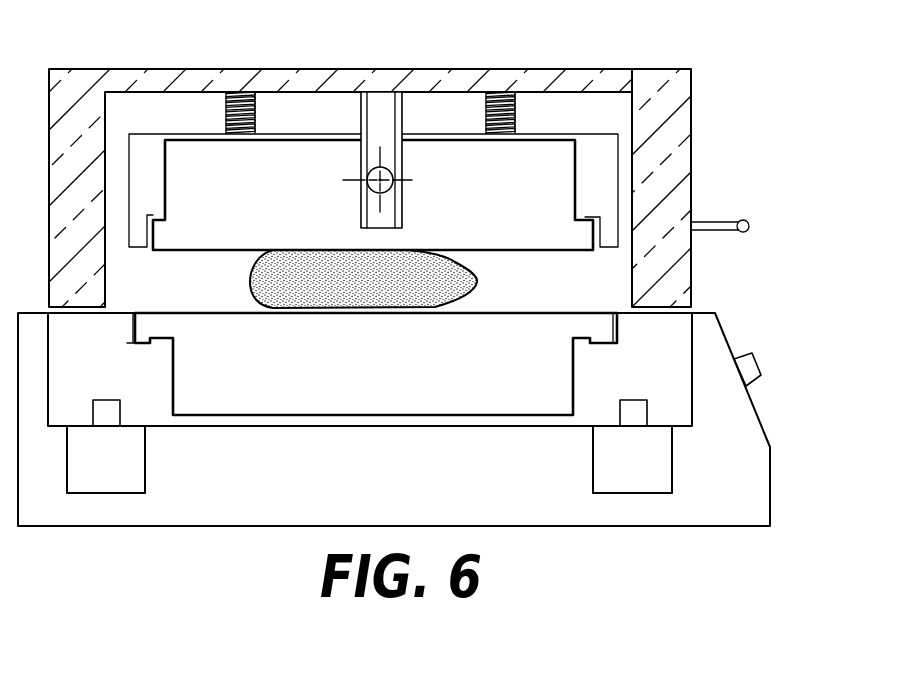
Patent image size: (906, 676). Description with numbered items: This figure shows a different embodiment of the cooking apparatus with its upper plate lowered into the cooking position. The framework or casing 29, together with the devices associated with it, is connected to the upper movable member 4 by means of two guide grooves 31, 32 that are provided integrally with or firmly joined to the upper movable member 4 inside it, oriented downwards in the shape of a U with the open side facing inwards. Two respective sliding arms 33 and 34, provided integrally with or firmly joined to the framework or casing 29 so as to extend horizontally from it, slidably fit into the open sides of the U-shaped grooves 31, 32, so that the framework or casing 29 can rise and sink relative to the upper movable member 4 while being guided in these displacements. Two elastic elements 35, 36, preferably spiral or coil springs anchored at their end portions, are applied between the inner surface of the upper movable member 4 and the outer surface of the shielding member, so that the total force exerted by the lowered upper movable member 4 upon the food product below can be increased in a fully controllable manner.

The upper movable member 4 is at (453, 192).
The framework or casing 29 is at (623, 188).
The guide groove 31 is at (459, 128).
The guide groove 32 is at (405, 128).
The sliding arm 33 is at (327, 186).
The sliding arm 34 is at (366, 177).
The elastic element 35 is at (220, 123).
The elastic element 36 is at (523, 127).